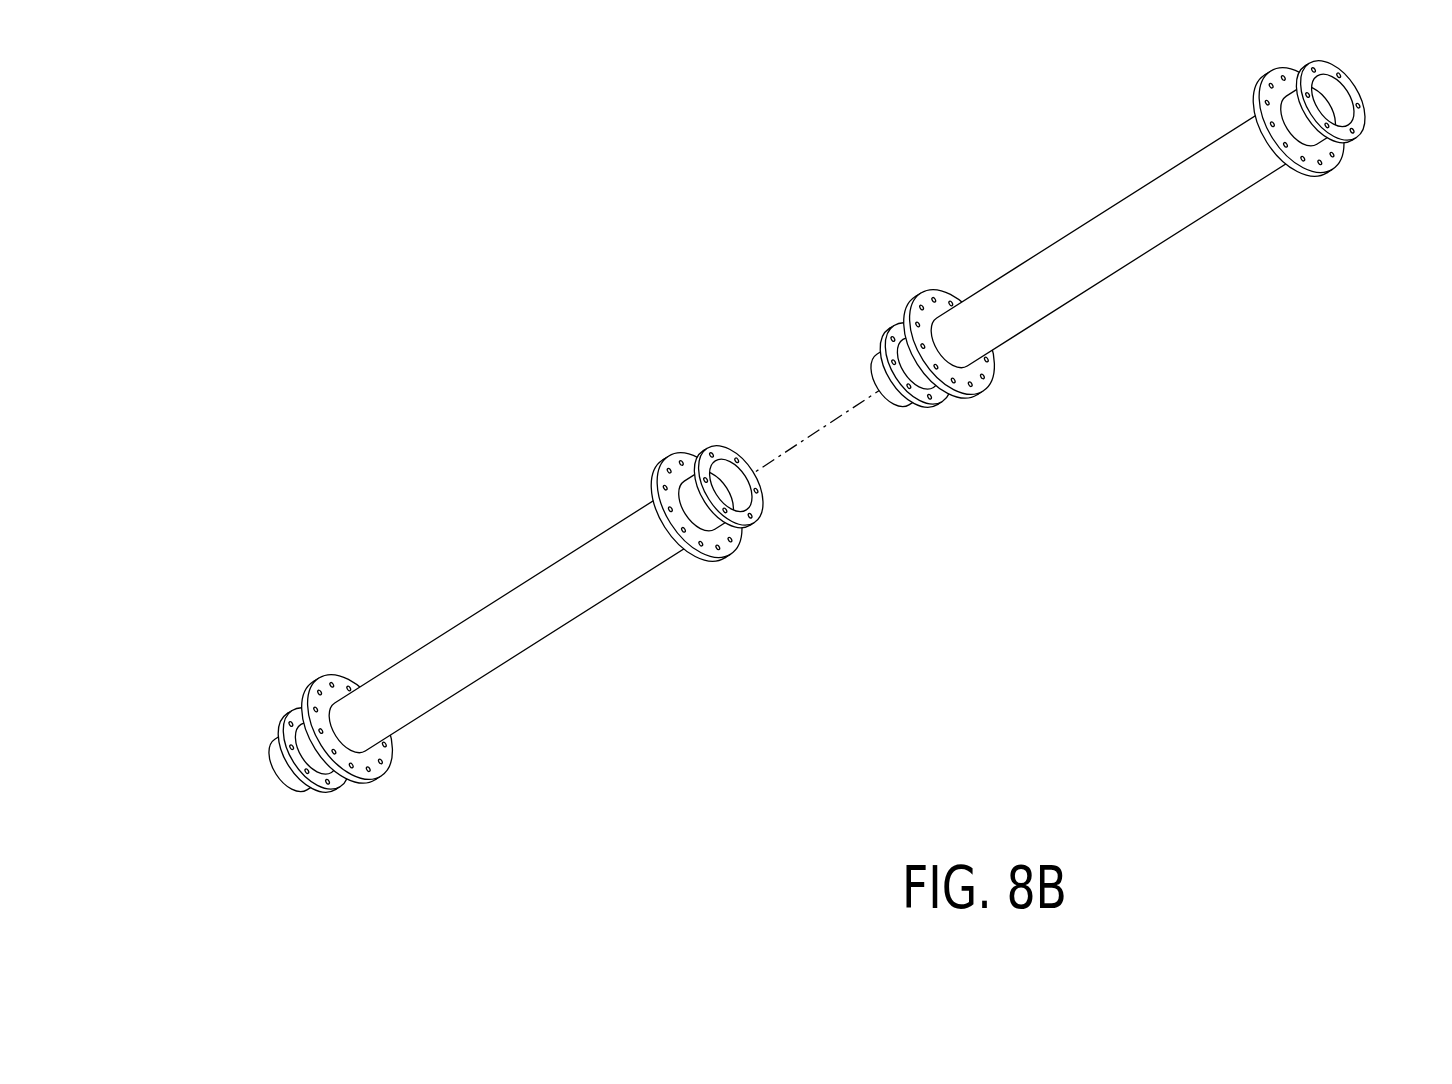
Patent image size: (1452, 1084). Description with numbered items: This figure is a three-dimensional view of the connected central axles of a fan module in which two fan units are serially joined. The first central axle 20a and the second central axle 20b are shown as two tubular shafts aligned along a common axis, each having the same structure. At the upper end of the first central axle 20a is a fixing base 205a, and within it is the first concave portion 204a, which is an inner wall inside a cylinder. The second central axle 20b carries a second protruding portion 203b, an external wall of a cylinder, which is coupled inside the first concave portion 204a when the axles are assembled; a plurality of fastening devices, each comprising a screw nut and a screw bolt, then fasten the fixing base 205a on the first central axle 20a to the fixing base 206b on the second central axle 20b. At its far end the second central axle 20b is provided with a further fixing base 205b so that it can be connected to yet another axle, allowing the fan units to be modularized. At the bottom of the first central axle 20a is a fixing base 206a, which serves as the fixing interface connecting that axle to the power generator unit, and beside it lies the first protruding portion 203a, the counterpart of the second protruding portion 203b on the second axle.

The first central axle 20a is at (570, 597).
The second central axle 20b is at (1222, 203).
The first protruding portion 203a is at (287, 766).
The second protruding portion 203b is at (902, 398).
The first concave portion 204a is at (737, 500).
The fixing base 205a is at (759, 498).
The fixing base 205b is at (1358, 112).
The fixing base 206a is at (293, 720).
The fixing base 206b is at (893, 354).